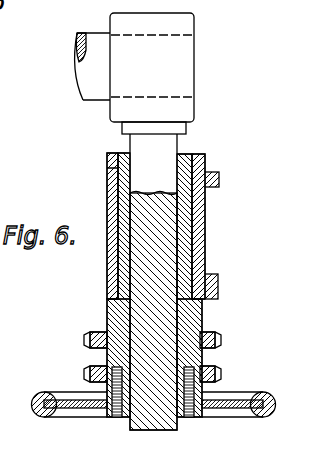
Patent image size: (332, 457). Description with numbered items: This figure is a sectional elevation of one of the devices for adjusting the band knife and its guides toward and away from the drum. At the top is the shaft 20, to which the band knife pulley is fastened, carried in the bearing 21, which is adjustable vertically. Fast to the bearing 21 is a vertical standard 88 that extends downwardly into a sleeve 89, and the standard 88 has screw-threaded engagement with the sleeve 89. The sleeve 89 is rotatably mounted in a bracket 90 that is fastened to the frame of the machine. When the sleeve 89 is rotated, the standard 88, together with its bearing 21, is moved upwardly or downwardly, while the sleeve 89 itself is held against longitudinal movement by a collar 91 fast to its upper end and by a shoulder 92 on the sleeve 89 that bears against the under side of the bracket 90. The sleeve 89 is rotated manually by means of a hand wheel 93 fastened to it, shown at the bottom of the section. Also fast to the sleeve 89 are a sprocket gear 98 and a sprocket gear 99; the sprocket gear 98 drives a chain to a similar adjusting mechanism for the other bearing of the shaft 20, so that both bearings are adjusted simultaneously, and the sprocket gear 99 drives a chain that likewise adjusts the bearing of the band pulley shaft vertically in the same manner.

The shaft 20 is at (93, 95).
The bearing 21 is at (187, 28).
The vertical standard 88 is at (166, 152).
The sleeve 89 is at (196, 318).
The bracket 90 is at (198, 237).
The collar 91 is at (196, 167).
The shoulder 92 is at (197, 292).
The hand wheel 93 is at (237, 409).
The sprocket gear 98 is at (222, 340).
The sprocket gear 99 is at (222, 374).